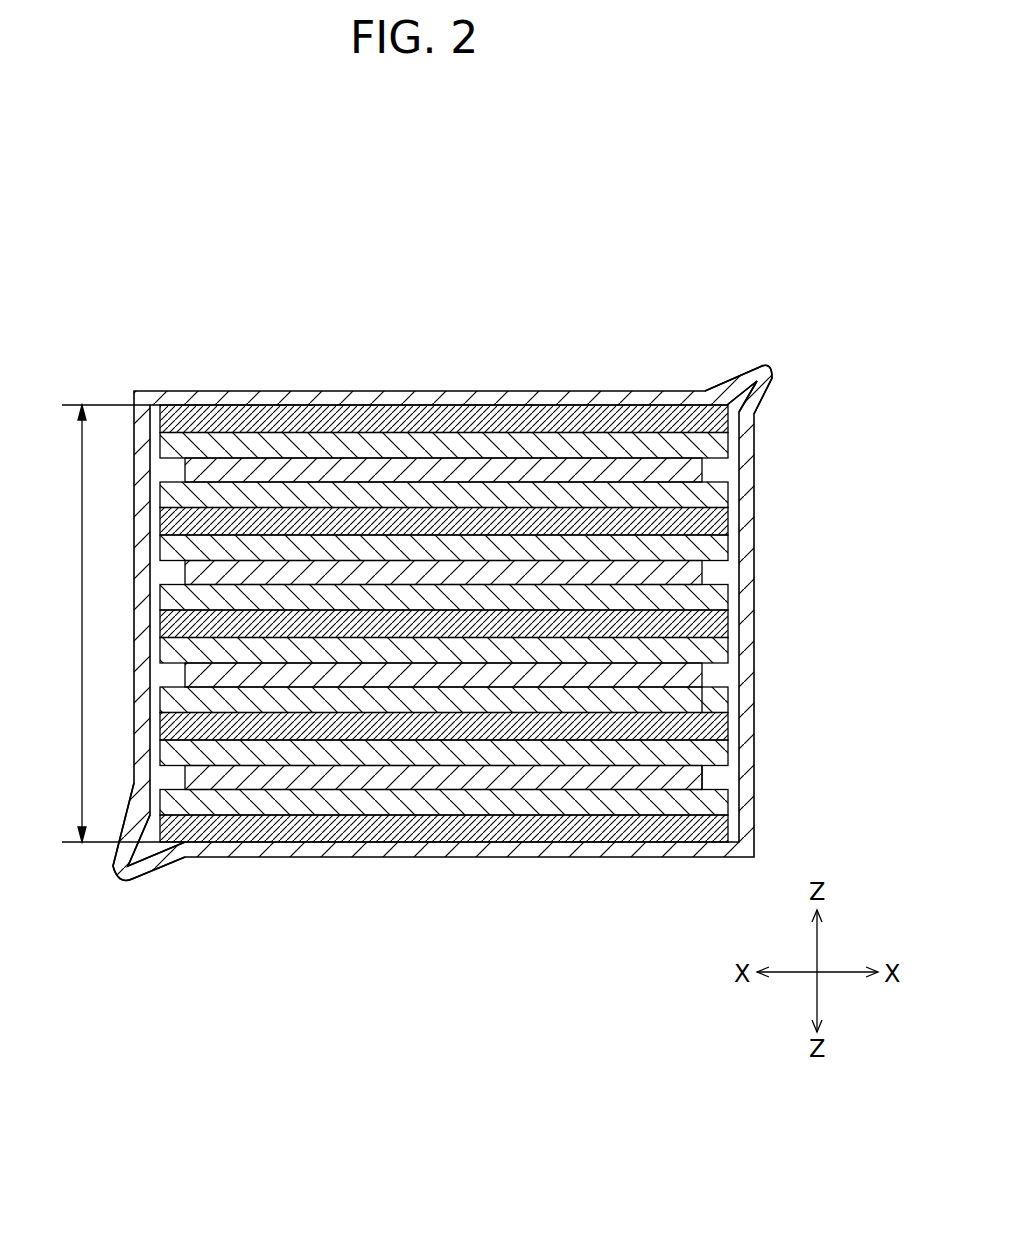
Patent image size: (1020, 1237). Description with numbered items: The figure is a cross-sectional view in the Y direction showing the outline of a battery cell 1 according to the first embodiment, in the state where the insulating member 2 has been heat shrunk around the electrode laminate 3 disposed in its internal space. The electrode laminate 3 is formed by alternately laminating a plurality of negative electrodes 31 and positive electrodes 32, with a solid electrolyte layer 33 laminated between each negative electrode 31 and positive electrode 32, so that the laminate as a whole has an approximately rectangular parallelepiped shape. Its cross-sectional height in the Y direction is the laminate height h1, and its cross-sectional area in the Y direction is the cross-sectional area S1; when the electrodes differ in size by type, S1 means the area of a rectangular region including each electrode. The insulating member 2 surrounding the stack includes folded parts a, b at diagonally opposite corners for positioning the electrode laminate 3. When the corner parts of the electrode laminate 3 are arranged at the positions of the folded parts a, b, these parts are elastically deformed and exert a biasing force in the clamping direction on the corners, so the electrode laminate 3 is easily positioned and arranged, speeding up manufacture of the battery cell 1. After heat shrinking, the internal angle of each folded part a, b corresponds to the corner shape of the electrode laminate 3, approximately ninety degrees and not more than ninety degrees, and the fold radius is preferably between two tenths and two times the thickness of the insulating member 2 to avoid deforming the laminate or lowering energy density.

The battery cell 1 is at (840, 214).
The insulating member 2 is at (418, 391).
The electrode laminate 3 is at (786, 630).
The negative electrode 31 is at (710, 518).
The positive electrode 32 is at (690, 573).
The solid electrolyte layer 33 is at (710, 553).
The folded part a is at (762, 367).
The folded part b is at (128, 882).
The cross-sectional area S1 is at (705, 697).
The laminate height h1 is at (115, 623).